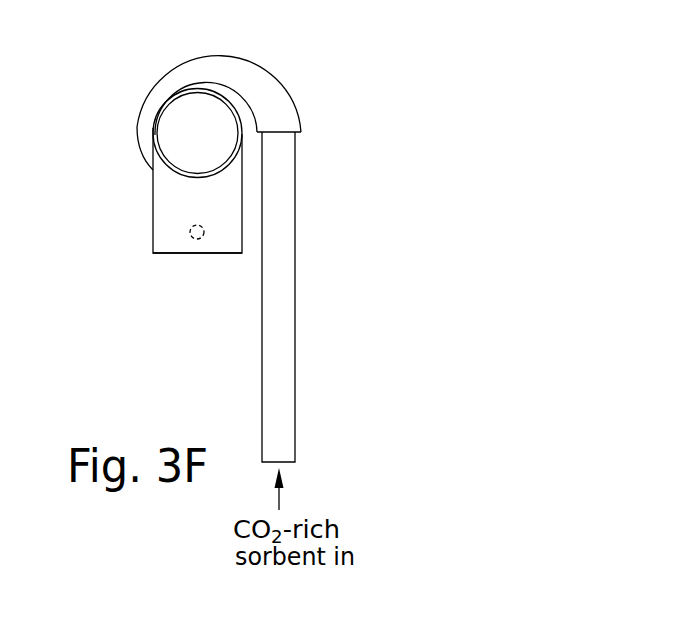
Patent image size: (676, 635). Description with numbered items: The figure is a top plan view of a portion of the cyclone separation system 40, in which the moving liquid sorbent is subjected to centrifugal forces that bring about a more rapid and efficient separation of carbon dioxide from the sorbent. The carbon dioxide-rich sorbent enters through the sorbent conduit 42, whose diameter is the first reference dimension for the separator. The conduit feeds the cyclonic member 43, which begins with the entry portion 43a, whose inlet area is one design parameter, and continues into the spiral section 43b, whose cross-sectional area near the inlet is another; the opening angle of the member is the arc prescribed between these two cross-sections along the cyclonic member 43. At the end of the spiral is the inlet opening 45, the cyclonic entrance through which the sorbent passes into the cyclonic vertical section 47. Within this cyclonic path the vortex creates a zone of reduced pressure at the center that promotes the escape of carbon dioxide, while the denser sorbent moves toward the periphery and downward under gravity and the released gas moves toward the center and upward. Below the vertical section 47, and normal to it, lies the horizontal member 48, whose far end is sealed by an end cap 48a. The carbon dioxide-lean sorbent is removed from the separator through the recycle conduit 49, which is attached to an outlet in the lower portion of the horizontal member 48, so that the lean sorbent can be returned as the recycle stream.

The cyclone separation system 40 is at (111, 67).
The sorbent conduit 42 is at (290, 277).
The cyclonic member 43 is at (265, 37).
The entry portion 43a is at (283, 90).
The spiral section 43b is at (184, 60).
The inlet opening 45 is at (150, 132).
The cyclonic vertical section 47 is at (203, 177).
The horizontal member 48 is at (175, 205).
The end cap 48a is at (197, 254).
The recycle conduit 49 is at (190, 227).